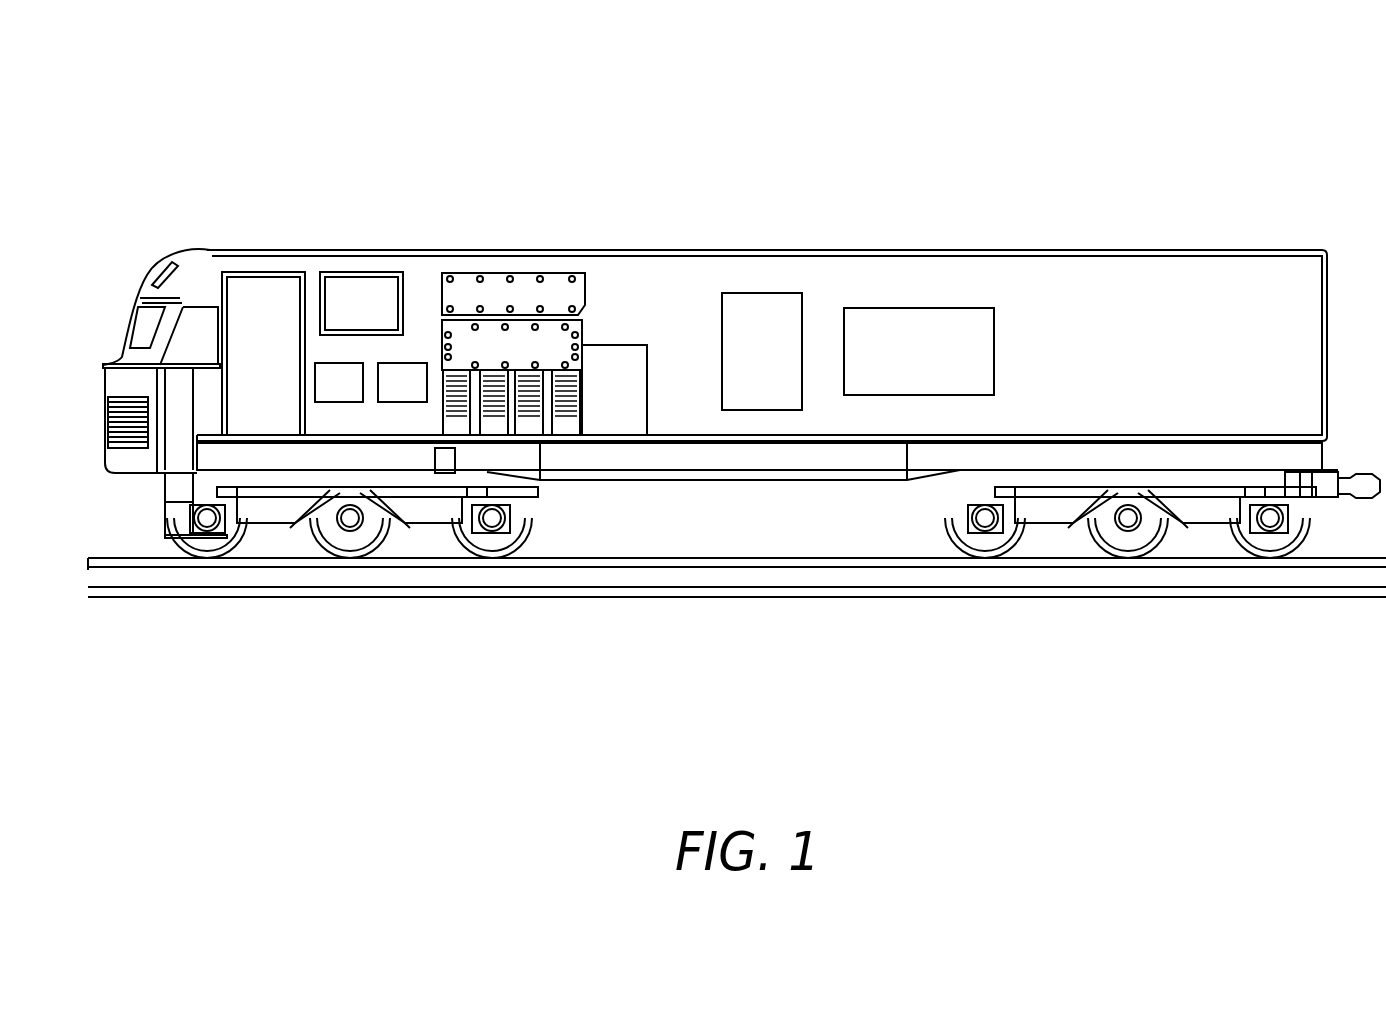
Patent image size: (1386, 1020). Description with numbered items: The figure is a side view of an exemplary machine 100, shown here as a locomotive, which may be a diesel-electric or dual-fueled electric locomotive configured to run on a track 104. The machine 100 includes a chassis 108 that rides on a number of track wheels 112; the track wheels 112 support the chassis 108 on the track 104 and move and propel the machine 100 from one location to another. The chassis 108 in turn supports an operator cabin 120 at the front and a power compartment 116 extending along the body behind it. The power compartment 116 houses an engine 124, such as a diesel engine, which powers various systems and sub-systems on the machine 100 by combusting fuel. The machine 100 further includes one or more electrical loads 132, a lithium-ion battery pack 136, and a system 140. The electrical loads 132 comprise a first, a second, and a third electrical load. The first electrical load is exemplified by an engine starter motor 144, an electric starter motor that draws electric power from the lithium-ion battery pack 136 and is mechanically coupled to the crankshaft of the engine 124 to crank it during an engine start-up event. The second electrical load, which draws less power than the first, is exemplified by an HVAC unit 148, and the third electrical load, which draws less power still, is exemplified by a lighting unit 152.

The machine 100 is at (190, 116).
The track 104 is at (90, 562).
The chassis 108 is at (741, 574).
The track wheels 112 is at (362, 548).
The power compartment 116 is at (1330, 197).
The operator cabin 120 is at (148, 262).
The engine 124 is at (588, 335).
The electrical loads 132 is at (480, 404).
The lithium-ion battery pack 136 is at (870, 395).
The system 140 is at (760, 410).
The engine starter motor 144 is at (647, 397).
The HVAC unit 148 is at (318, 363).
The lighting unit 152 is at (412, 363).